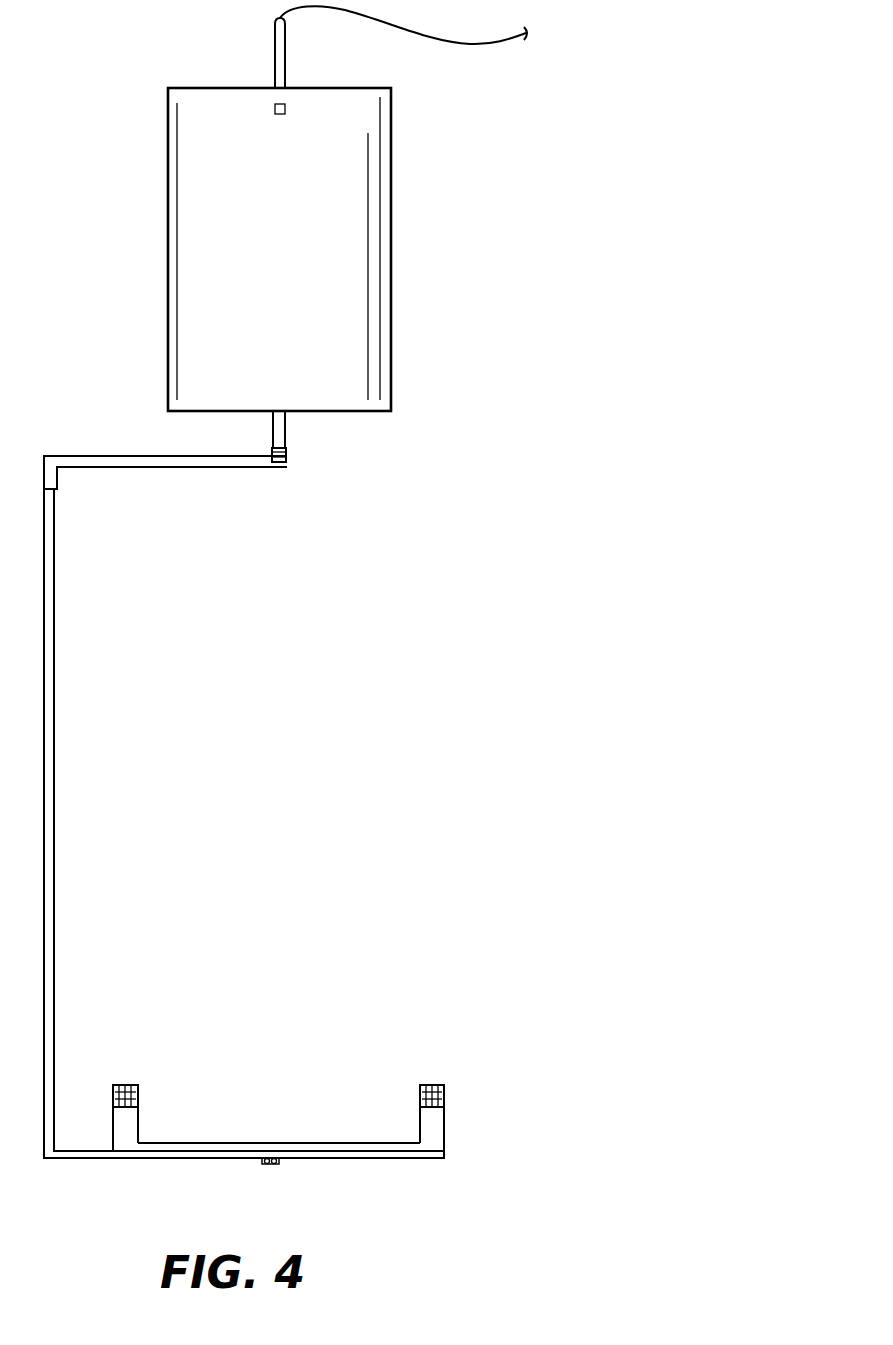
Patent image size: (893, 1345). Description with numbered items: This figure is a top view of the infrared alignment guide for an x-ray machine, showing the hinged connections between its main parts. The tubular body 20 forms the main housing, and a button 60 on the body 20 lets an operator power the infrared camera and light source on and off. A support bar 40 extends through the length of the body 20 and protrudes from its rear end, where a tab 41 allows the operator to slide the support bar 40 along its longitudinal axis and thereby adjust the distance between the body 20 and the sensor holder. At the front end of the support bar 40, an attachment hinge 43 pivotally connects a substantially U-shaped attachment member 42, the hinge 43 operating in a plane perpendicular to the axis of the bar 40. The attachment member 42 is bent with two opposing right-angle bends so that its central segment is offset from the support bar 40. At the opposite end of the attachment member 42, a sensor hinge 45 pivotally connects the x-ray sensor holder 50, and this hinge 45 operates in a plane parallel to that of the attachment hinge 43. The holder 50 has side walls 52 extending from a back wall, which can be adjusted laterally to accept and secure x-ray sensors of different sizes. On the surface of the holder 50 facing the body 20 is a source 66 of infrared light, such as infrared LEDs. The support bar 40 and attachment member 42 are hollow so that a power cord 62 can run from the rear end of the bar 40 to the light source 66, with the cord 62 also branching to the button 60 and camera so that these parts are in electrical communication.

The tubular body 20 is at (391, 300).
The support bar 40 is at (286, 428).
The tab 41 is at (273, 24).
The attachment member 42 is at (55, 713).
The attachment hinge 43 is at (288, 460).
The sensor hinge 45 is at (270, 1166).
The x-ray sensor holder 50 is at (412, 1160).
The side walls 52 is at (112, 1120).
The button 60 is at (277, 113).
The power cord 62 is at (472, 45).
The source of infrared light 66 is at (127, 1085).